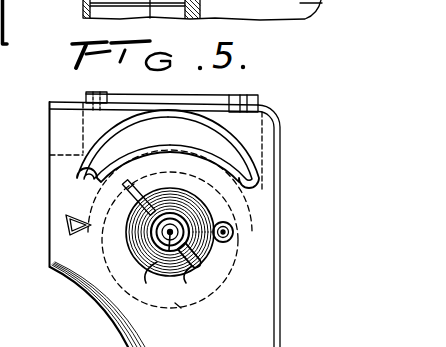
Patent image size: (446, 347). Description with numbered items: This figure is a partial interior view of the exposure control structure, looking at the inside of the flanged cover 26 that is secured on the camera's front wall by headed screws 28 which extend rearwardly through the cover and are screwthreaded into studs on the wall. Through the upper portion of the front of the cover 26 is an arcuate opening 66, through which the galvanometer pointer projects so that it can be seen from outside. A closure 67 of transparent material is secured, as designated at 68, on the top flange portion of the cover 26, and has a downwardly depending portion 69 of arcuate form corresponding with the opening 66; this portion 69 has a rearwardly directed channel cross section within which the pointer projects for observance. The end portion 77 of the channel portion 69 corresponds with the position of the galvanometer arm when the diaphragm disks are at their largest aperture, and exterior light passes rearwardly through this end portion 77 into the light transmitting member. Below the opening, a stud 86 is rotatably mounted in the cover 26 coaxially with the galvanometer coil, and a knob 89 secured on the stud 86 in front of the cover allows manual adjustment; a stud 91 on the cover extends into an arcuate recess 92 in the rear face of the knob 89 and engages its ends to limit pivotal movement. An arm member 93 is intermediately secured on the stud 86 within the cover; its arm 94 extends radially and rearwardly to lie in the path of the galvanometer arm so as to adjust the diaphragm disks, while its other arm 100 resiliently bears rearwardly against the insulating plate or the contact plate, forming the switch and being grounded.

The flanged cover 26 is at (278, 223).
The headed screws 28 is at (163, 22).
The arcuate opening 66 is at (84, 158).
The closure 67 is at (187, 100).
The securing means 68 is at (97, 92).
The downwardly depending portion 69 is at (250, 166).
The end portion 77 is at (74, 214).
The stud 86 is at (167, 248).
The knob 89 is at (178, 305).
The stud 91 is at (233, 231).
The arcuate recess 92 is at (236, 207).
The arm member 93 is at (155, 238).
The arm 94 is at (131, 199).
The arm 100 is at (188, 270).